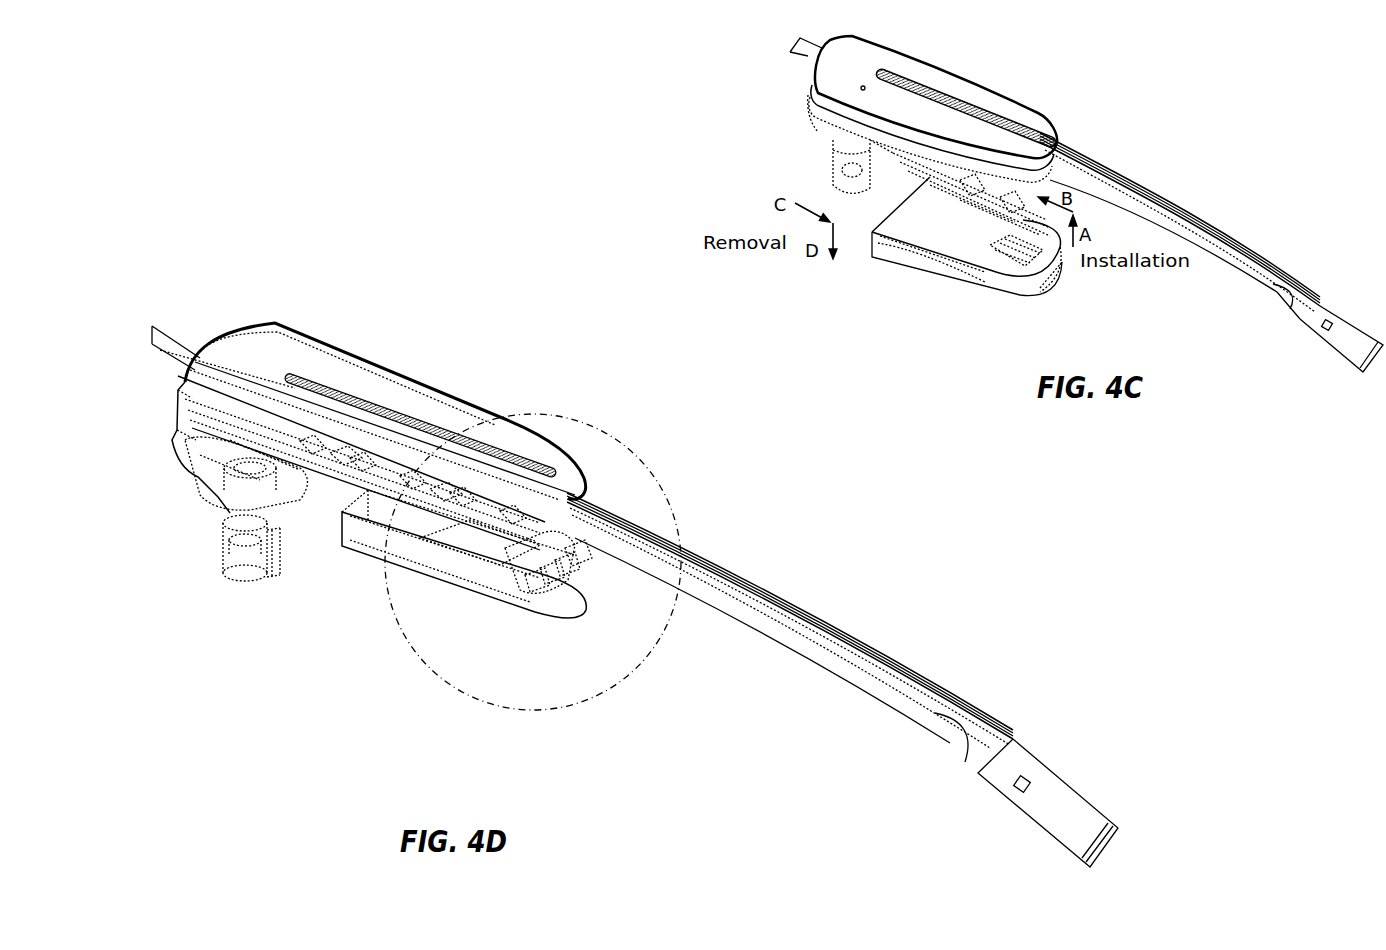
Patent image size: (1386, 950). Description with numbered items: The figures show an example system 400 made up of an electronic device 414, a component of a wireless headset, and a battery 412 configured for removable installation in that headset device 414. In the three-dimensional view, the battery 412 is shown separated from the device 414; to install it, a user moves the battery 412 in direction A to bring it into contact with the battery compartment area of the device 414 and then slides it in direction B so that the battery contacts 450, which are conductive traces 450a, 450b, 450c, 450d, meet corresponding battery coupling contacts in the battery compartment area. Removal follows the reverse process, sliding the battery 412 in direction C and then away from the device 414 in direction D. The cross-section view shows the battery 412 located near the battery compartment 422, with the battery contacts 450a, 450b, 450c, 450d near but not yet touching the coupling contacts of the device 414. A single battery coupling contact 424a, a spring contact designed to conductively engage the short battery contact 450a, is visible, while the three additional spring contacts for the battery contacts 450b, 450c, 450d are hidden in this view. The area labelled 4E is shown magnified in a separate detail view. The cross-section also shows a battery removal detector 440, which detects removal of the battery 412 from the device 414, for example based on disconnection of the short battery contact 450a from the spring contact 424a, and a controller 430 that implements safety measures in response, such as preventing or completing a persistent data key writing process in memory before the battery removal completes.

In FIG. 4C, the system 400 is at (1110, 76).
In FIG. 4D, the system 400 is at (530, 267).
In FIG. 4C, the battery 412 is at (917, 258).
In FIG. 4D, the battery 412 is at (393, 553).
In FIG. 4C, the electronic device 414 is at (833, 113).
In FIG. 4D, the electronic device 414 is at (278, 356).
In FIG. 4D, the battery compartment 422 is at (363, 493).
In FIG. 4D, the battery coupling contact 424a is at (520, 560).
In FIG. 4D, the controller 430 is at (363, 463).
In FIG. 4D, the battery removal detector 440 is at (393, 480).
In FIG. 4C, the battery contacts 450 is at (993, 272).
In FIG. 4D, the short battery contact 450a is at (537, 583).
In FIG. 4D, the battery contact 450b is at (550, 577).
In FIG. 4D, the battery contact 450c is at (565, 568).
In FIG. 4D, the battery contact 450d is at (573, 560).
In FIG. 4D, the magnified view area 4E is at (663, 480).